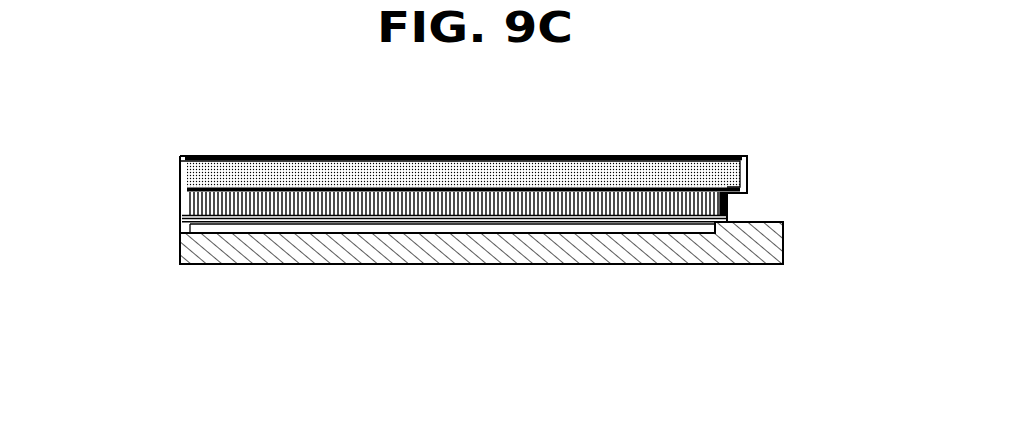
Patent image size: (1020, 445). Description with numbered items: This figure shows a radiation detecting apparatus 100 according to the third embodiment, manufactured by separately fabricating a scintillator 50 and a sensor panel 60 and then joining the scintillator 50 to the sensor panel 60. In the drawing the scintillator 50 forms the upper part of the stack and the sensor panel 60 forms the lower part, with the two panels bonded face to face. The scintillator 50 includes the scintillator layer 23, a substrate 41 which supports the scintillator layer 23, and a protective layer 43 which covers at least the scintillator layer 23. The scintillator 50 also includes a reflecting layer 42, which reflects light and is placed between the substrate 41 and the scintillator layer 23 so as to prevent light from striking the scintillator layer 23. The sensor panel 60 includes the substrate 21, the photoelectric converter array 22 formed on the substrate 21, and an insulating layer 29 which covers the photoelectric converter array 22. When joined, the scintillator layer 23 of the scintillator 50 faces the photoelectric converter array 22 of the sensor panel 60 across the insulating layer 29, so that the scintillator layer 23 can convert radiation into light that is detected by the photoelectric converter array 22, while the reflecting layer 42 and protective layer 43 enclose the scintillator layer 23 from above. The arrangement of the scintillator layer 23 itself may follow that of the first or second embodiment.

The radiation detecting apparatus 100 is at (789, 282).
The scintillator 50 is at (437, 218).
The sensor panel 60 is at (432, 292).
The substrate 21 is at (660, 253).
The photoelectric converter array 22 is at (438, 232).
The scintillator layer 23 is at (503, 208).
The insulating layer 29 is at (727, 212).
The substrate 41 is at (645, 170).
The reflecting layer 42 is at (733, 188).
The protective layer 43 is at (563, 157).